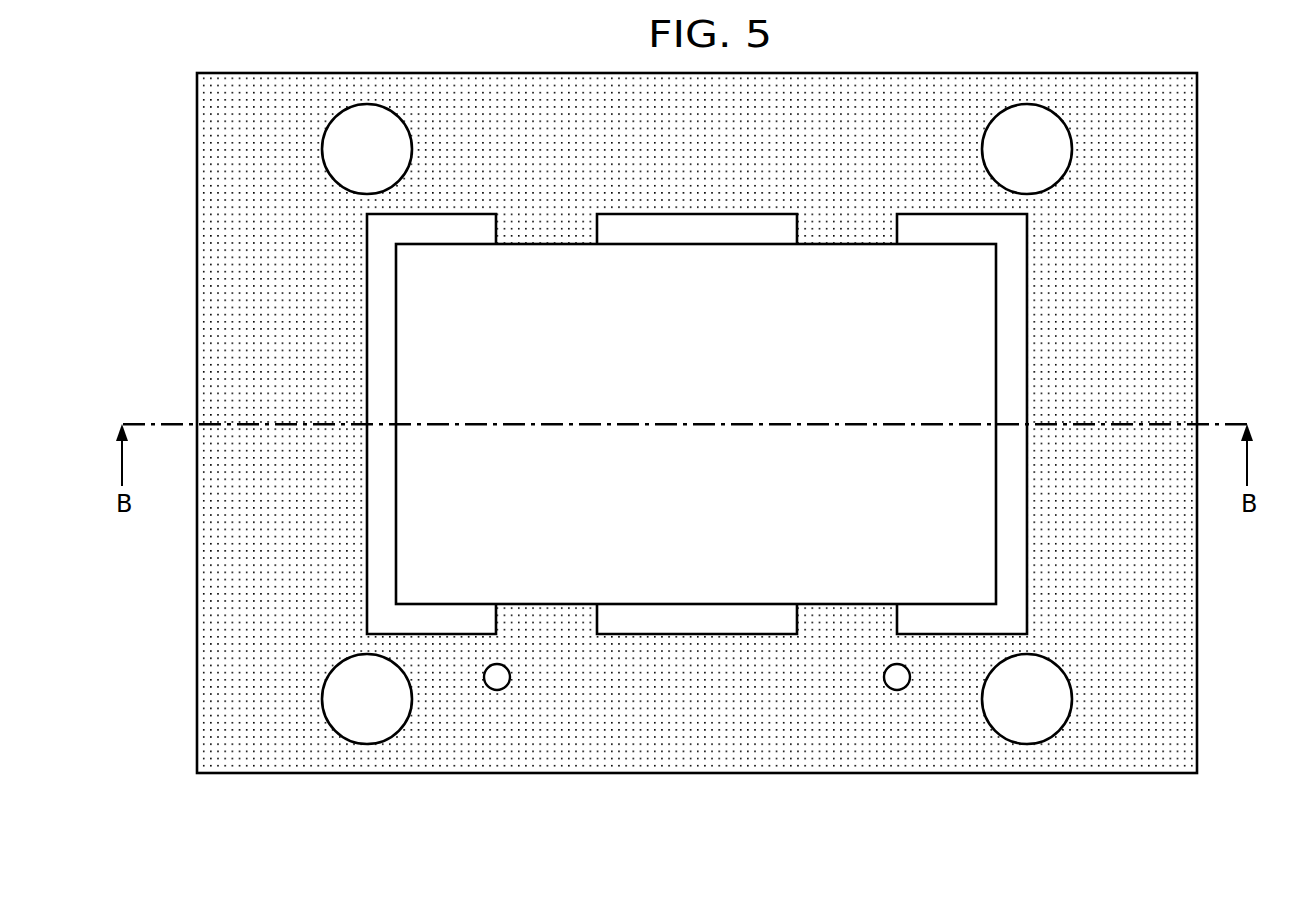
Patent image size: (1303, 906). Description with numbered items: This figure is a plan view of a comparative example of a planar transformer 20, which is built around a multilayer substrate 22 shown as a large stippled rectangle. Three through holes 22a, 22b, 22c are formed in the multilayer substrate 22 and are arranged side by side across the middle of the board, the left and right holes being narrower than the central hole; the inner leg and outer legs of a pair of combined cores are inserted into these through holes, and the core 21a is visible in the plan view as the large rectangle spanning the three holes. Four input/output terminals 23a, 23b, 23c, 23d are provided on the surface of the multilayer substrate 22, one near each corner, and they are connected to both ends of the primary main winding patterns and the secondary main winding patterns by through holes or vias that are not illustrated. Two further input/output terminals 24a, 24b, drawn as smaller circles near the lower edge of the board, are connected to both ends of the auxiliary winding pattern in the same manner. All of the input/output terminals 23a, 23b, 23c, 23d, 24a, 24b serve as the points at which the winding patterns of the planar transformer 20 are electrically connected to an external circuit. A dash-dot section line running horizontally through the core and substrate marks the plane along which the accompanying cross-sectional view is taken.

The planar transformer 20 is at (1239, 42).
The core 21a is at (396, 358).
The multilayer substrate 22 is at (1207, 550).
The through hole 22a is at (456, 214).
The through hole 22b is at (752, 214).
The through hole 22c is at (1032, 292).
The input/output terminal 23a is at (1037, 106).
The input/output terminal 23b is at (381, 106).
The input/output terminal 23c is at (395, 736).
The input/output terminal 23d is at (1050, 738).
The input/output terminal 24a is at (905, 689).
The input/output terminal 24b is at (505, 689).